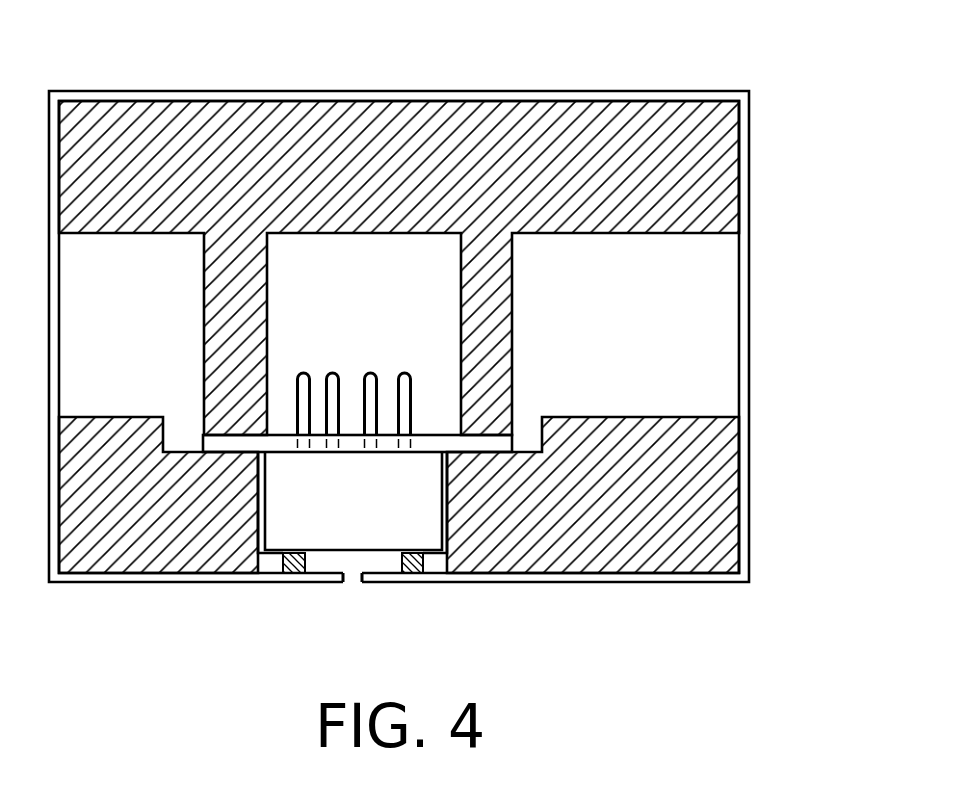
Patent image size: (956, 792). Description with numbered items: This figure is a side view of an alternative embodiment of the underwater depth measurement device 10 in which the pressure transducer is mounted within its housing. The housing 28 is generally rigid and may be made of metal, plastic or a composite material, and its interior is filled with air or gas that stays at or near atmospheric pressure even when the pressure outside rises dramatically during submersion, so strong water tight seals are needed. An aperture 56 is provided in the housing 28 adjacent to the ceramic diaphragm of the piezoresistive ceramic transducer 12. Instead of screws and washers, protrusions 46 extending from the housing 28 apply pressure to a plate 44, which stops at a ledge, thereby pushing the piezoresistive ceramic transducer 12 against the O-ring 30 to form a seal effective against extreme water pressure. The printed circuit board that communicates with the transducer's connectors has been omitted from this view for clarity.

The underwater depth measurement device 10 is at (257, 60).
The piezoresistive ceramic transducer 12 is at (367, 345).
The housing 28 is at (693, 165).
The O-ring 30 is at (288, 574).
The plate 44 is at (487, 443).
The protrusions 46 is at (487, 323).
The aperture 56 is at (353, 581).